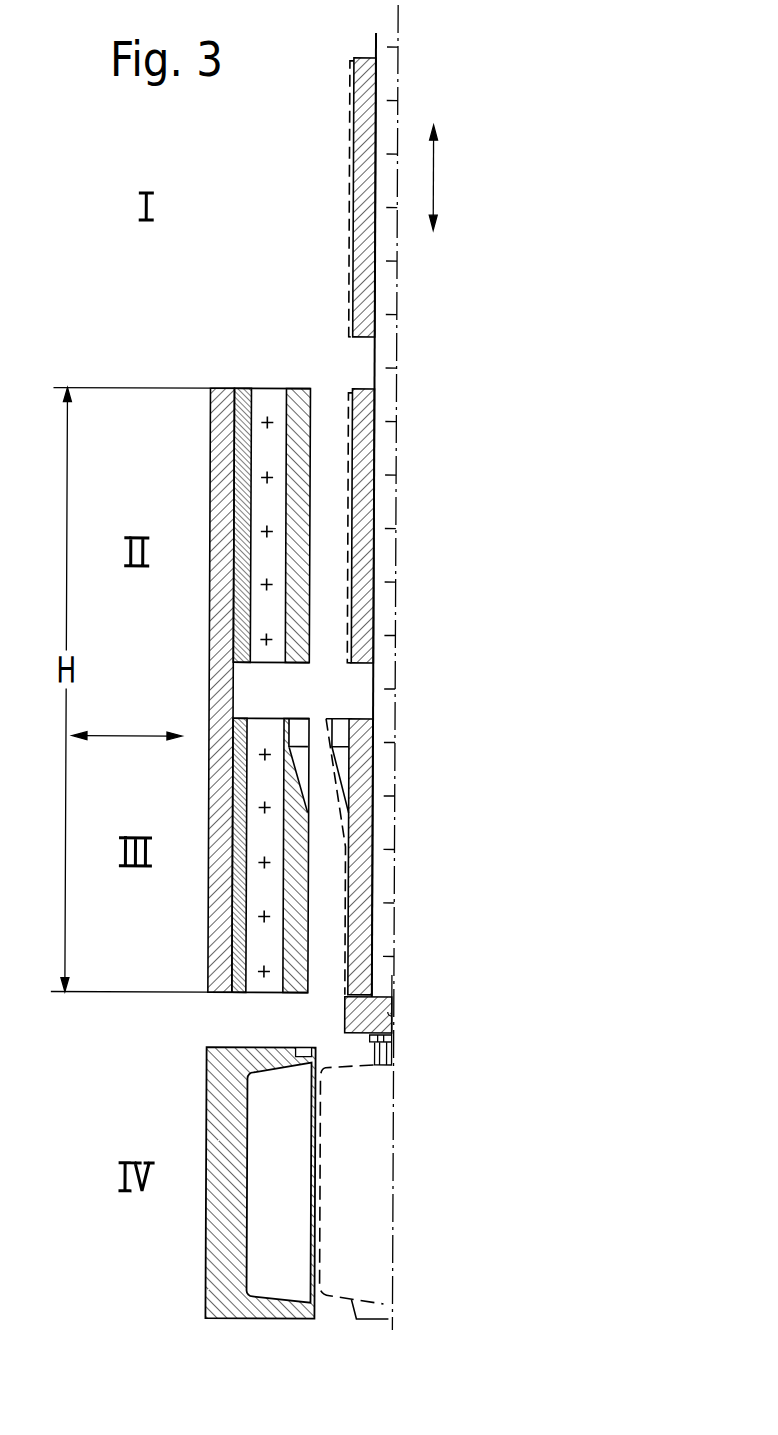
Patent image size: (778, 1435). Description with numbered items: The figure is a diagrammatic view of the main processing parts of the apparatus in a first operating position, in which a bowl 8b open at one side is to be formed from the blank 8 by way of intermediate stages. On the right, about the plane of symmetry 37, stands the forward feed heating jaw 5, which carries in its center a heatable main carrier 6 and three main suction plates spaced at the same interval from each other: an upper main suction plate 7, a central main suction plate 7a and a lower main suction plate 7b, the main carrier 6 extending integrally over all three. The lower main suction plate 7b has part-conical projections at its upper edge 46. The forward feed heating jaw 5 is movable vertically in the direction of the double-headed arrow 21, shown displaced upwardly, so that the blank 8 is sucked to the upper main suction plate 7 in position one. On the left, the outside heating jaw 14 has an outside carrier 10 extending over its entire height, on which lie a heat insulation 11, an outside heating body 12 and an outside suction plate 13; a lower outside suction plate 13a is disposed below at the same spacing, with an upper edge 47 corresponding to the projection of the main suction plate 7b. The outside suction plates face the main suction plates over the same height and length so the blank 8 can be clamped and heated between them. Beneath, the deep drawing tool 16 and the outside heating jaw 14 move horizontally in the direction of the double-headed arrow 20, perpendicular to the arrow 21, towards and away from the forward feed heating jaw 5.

The forward feed heating jaw 5 is at (368, 30).
The main carrier 6 is at (396, 89).
The upper main suction plate 7 is at (367, 280).
The central main suction plate 7a is at (363, 528).
The lower main suction plate 7b is at (362, 860).
The blank 8 is at (348, 193).
The bowl 8b is at (392, 1319).
The outside carrier 10 is at (223, 415).
The heat insulation 11 is at (240, 460).
The outside heating body 12 is at (262, 508).
The outside suction plate 13 is at (297, 617).
The lower outside suction plate 13a is at (290, 940).
The outside heating jaw 14 is at (218, 382).
The deep drawing tool 16 is at (215, 1233).
The double-headed arrow 20 is at (137, 738).
The double-headed arrow 21 is at (433, 177).
The plane of symmetry 37 is at (397, 370).
The upper edge 46 is at (360, 718).
The upper edge 47 is at (295, 718).